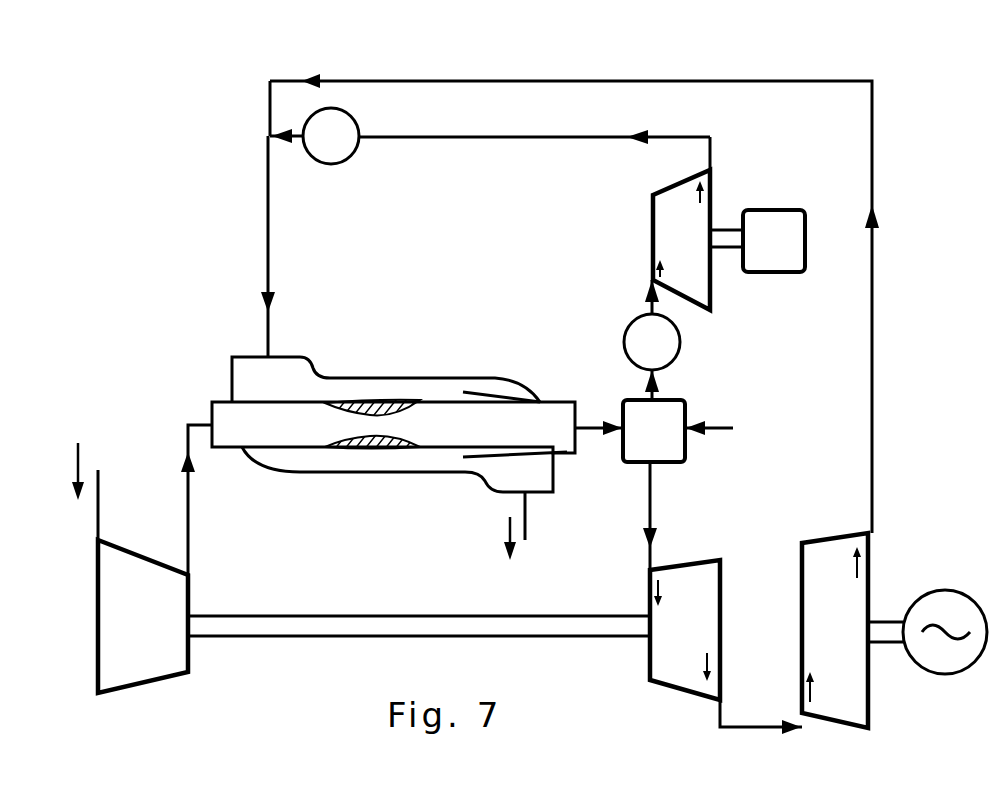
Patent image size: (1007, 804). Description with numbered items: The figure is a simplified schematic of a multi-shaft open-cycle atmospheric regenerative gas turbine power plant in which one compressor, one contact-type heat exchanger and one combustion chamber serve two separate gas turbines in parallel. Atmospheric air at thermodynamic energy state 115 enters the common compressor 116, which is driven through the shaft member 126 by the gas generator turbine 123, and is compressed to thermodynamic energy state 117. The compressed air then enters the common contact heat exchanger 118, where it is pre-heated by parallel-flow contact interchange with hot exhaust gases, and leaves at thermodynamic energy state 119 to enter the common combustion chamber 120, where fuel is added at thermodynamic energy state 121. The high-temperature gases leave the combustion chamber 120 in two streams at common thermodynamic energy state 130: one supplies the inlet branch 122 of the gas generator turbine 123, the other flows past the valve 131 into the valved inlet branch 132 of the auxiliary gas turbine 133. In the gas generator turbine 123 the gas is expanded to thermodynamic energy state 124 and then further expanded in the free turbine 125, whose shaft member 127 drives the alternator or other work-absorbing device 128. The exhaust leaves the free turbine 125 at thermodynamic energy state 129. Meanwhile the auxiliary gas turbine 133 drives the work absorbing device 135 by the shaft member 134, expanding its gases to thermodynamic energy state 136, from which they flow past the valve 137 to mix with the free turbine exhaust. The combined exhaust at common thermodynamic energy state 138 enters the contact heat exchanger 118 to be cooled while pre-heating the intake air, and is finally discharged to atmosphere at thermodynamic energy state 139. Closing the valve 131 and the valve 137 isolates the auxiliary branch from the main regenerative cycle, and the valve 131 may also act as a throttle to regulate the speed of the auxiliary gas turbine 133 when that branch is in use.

The thermodynamic energy state of atmospheric air 115 is at (92, 537).
The common compressor 116 is at (158, 629).
The thermodynamic energy state of compressed air 117 is at (175, 530).
The common contact heat exchanger 118 is at (427, 463).
The thermodynamic energy state of pre-heated intake fluid 119 is at (590, 433).
The common combustion chamber 120 is at (670, 440).
The thermodynamic energy state of fuel 121 is at (710, 437).
The inlet branch of gas generator turbine 122 is at (642, 520).
The gas generator turbine 123 is at (700, 637).
The thermodynamic energy state of partly expanded fluid 124 is at (760, 718).
The free turbine 125 is at (850, 637).
The shaft member 126 is at (362, 622).
The shaft member 127 is at (888, 625).
The alternator or other work-absorbing device 128 is at (948, 595).
The thermodynamic energy state of free turbine exhaust 129 is at (272, 101).
The common thermodynamic energy state of combustion gases 130 is at (655, 395).
The valve 131 is at (630, 337).
The valved inlet branch of auxiliary gas turbine 132 is at (647, 303).
The auxiliary gas turbine 133 is at (700, 259).
The shaft member 134 is at (727, 233).
The work absorbing device 135 is at (777, 218).
The thermodynamic energy state of auxiliary turbine exhaust 136 is at (533, 130).
The valve 137 is at (348, 143).
The common thermodynamic energy state of combined exhaust 138 is at (270, 228).
The thermodynamic energy state of discharged exhaust 139 is at (518, 518).